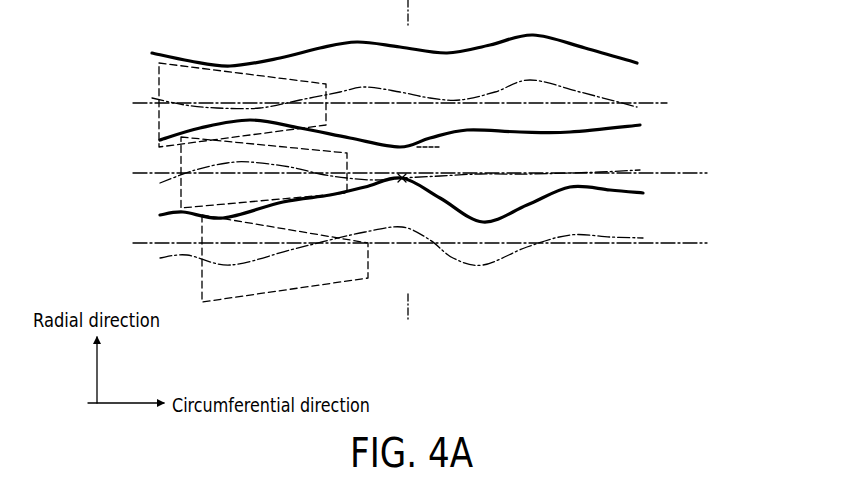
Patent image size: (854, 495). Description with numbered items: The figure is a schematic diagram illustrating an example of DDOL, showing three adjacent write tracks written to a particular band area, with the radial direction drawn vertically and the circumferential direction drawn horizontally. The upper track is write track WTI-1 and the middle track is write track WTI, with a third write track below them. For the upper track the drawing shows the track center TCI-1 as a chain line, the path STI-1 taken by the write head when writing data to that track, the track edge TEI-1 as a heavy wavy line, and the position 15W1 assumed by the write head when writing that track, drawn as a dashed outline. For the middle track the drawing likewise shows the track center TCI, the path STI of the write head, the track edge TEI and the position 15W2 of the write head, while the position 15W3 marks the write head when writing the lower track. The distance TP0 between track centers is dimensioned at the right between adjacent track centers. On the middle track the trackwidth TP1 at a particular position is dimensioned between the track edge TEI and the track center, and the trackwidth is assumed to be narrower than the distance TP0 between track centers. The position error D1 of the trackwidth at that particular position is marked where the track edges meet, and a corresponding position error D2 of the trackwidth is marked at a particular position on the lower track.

The position of the write head 15W1 is at (157, 79).
The position of the write head 15W2 is at (180, 200).
The position of the write head 15W3 is at (202, 289).
The write track WTI-1 is at (100, 53).
The write track WTI is at (113, 140).
The track edge TEI-1 is at (527, 36).
The path of the write head STI-1 is at (528, 82).
The track center TCI-1 is at (683, 89).
The track edge TEI is at (528, 128).
The path of the write head STI is at (640, 168).
The track center TCI is at (657, 172).
The trackwidth TP1 is at (430, 148).
The distance between track centers TP0 is at (700, 174).
The position error D1 is at (400, 184).
The position error D2 is at (405, 229).